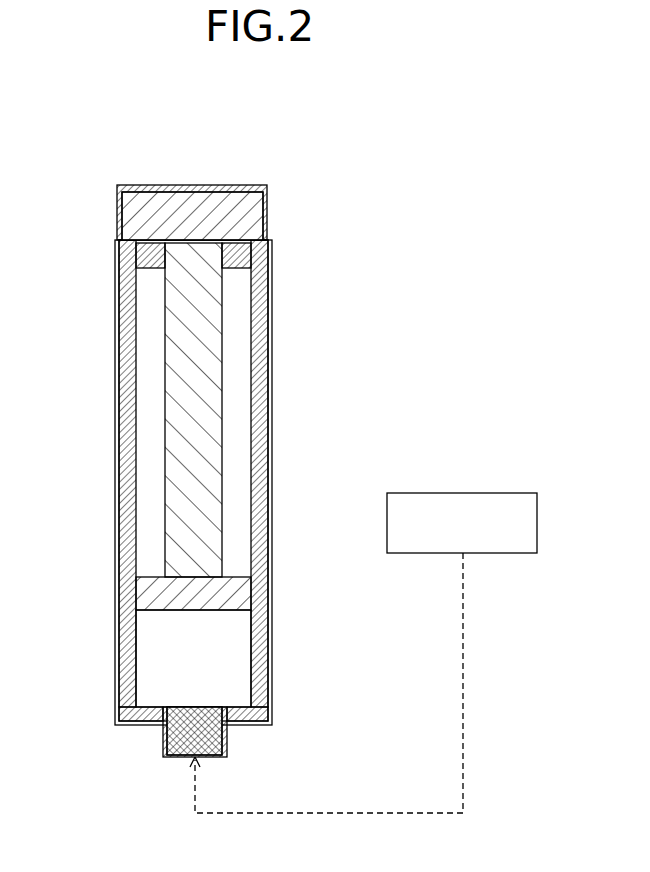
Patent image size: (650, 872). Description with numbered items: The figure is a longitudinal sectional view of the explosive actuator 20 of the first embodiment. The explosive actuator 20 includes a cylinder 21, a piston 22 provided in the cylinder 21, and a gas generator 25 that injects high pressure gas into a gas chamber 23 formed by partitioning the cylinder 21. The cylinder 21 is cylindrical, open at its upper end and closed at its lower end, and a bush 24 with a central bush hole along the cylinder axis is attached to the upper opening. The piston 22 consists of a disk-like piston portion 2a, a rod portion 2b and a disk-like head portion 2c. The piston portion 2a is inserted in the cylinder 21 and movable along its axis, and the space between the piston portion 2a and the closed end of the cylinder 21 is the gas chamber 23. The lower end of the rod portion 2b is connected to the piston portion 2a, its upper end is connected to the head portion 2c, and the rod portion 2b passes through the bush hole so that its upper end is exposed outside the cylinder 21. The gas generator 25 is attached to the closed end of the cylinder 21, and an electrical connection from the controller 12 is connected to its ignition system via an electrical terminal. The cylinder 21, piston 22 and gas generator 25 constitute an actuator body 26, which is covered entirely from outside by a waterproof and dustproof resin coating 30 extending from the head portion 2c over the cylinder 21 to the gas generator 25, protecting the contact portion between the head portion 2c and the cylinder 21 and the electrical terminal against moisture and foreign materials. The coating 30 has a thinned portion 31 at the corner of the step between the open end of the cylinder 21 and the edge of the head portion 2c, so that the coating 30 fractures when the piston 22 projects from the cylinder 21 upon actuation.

The explosive actuator 20 is at (288, 147).
The coating 30 is at (274, 300).
The thinned portion 31 is at (266, 230).
The cylinder 21 is at (119, 338).
The actuator body 26 is at (118, 500).
The head portion 2c is at (130, 214).
The bush 24 is at (144, 256).
The piston 22 is at (226, 398).
The rod portion 2b is at (175, 414).
The piston portion 2a is at (148, 600).
The gas chamber 23 is at (148, 655).
The gas generator 25 is at (165, 745).
The controller 12 is at (472, 493).